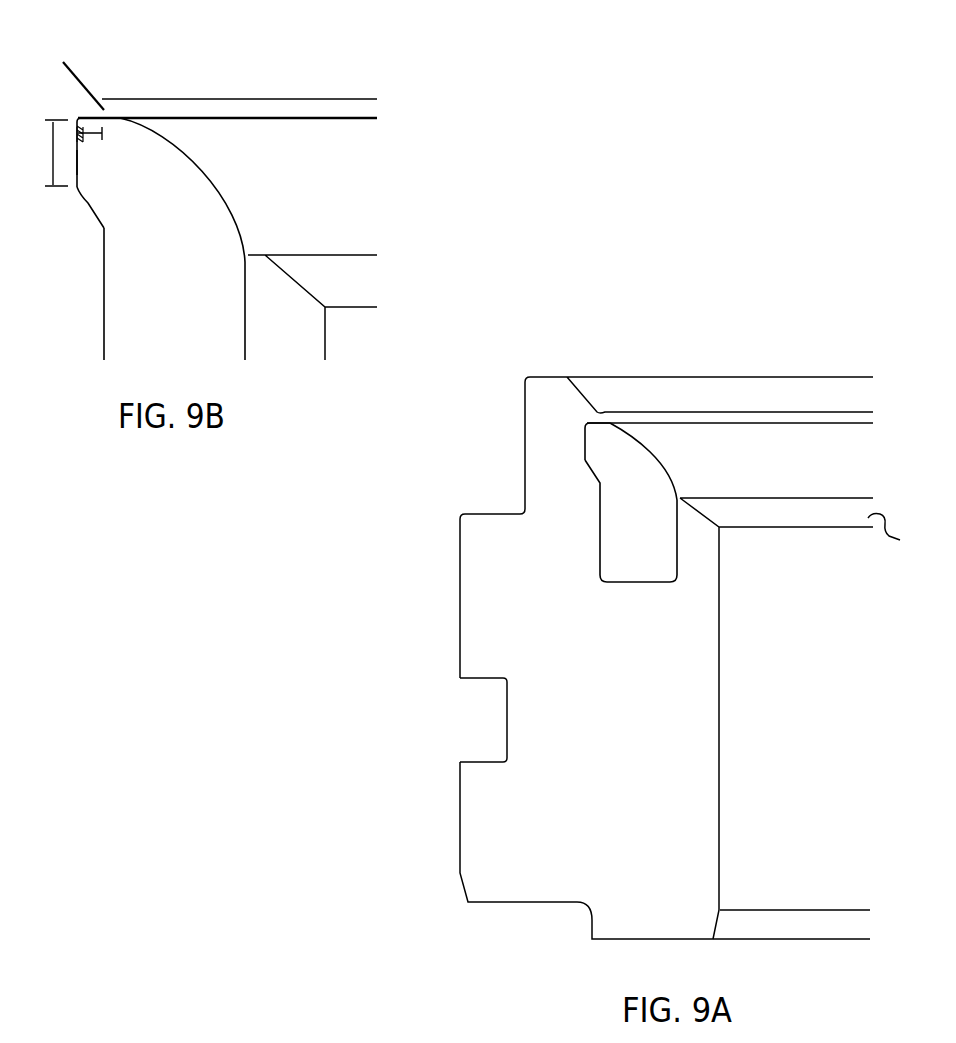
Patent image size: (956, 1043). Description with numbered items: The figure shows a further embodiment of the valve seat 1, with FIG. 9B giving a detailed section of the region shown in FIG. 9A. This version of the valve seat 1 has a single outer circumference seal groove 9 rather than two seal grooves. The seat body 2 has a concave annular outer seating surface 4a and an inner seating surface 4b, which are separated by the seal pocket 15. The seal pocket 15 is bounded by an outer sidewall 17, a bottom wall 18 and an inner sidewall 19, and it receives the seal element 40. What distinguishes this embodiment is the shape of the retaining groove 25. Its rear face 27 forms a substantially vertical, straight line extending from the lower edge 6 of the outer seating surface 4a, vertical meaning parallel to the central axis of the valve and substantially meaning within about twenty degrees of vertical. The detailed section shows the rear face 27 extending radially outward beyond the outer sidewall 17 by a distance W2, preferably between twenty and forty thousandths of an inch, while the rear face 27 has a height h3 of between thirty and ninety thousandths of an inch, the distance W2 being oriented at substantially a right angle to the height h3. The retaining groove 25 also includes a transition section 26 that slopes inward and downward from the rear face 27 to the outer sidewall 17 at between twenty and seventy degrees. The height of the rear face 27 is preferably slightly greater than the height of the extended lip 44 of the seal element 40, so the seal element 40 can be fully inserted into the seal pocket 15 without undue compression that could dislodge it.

In FIG. 9A, the valve seat 1 is at (388, 612).
In FIG. 9A, the seat body 2 is at (438, 631).
In FIG. 9B, the outer seating surface 4a is at (320, 80).
In FIG. 9A, the outer seating surface 4a is at (850, 403).
In FIG. 9B, the inner seating surface 4b is at (365, 287).
In FIG. 9A, the inner seating surface 4b is at (807, 718).
In FIG. 9B, the lower edge 6 is at (370, 110).
In FIG. 9A, the seal groove 9 is at (507, 718).
In FIG. 9A, the seal pocket 15 is at (556, 502).
In FIG. 9B, the outer sidewall 17 is at (102, 297).
In FIG. 9A, the outer sidewall 17 is at (597, 545).
In FIG. 9A, the bottom wall 18 is at (640, 583).
In FIG. 9A, the inner sidewall 19 is at (680, 555).
In FIG. 9B, the retaining groove 25 is at (112, 180).
In FIG. 9A, the retaining groove 25 is at (588, 440).
In FIG. 9B, the transition section 26 is at (85, 198).
In FIG. 9B, the rear face 27 is at (78, 162).
In FIG. 9A, the seal element 40 is at (859, 467).
In FIG. 9A, the extended lip 44 is at (588, 453).
In FIG. 9B, the distance W2 is at (90, 127).
In FIG. 9B, the height h3 is at (40, 153).